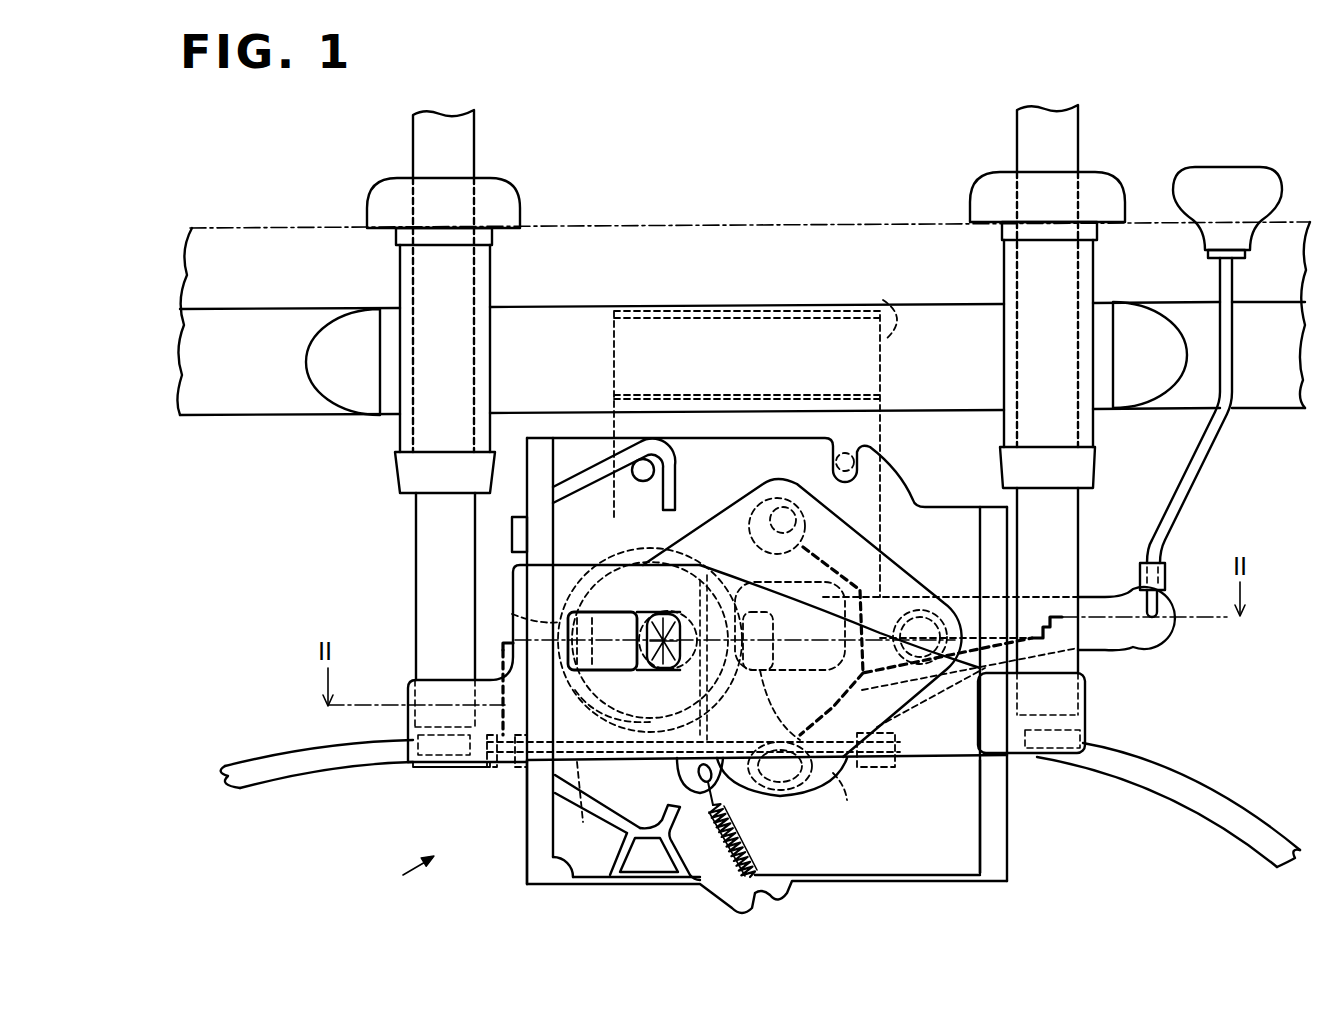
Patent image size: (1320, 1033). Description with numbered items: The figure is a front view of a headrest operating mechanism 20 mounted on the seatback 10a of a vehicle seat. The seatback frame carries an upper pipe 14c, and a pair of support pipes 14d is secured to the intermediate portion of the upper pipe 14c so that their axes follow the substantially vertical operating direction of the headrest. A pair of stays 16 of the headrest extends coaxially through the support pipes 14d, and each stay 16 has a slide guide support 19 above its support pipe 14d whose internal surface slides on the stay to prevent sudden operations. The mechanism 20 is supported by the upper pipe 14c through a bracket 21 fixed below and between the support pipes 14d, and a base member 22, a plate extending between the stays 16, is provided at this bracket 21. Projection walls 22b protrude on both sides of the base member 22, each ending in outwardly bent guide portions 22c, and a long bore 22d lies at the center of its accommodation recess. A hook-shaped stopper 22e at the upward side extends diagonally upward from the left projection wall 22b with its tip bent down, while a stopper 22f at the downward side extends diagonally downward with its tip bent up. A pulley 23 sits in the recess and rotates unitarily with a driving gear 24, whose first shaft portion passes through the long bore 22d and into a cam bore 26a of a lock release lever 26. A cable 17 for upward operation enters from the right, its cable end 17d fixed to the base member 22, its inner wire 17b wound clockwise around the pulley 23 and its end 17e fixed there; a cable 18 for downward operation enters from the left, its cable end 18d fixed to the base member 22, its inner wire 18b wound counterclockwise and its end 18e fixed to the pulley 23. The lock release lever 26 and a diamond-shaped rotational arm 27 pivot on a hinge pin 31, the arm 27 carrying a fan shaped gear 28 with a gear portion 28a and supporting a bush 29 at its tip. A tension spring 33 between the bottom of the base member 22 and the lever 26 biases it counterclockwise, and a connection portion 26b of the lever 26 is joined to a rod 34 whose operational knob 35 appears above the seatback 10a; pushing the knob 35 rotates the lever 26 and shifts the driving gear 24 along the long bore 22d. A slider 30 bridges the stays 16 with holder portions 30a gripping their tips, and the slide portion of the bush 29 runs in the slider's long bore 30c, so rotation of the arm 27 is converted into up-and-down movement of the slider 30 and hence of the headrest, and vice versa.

The seatback 10a is at (268, 226).
The upper pipe 14c is at (546, 310).
The support pipe 14d is at (494, 270).
The stay 16 is at (476, 141).
The cable for operating the headrest in an upward direction 17 is at (1170, 790).
The inner wire 17b is at (848, 798).
The cable end 17d is at (928, 766).
The end of the inner wire 17e is at (512, 614).
The cable for operating the headrest in a downward direction 18 is at (306, 775).
The inner wire 18b is at (585, 809).
The cable end 18d is at (466, 768).
The end of the inner wire 18e is at (845, 570).
The slide guide support 19 is at (522, 190).
The headrest operating mechanism 20 is at (721, 685).
The bracket 21 is at (881, 308).
The base member 22 is at (918, 884).
The projection wall 22b is at (565, 882).
The guide portion 22c is at (527, 870).
The long bore 22d is at (652, 676).
The stopper at an upward direction side 22e is at (680, 452).
The stopper at a downward direction side 22f is at (648, 838).
The pulley 23 is at (540, 590).
The driving gear 24 is at (662, 610).
The lock release lever 26 is at (1097, 648).
The cam bore 26a is at (597, 803).
The connection portion 26b is at (1100, 597).
The rotational arm 27 is at (792, 480).
The fan shaped gear 28 is at (797, 713).
The gear portion 28a is at (728, 777).
The bush 29 is at (600, 688).
The slider 30 is at (762, 665).
The holder portion 30a is at (1090, 712).
The long bore 30c is at (603, 615).
The hinge pin 31 is at (932, 578).
The tension spring 33 is at (750, 858).
The rod 34 is at (1193, 470).
The operational knob 35 is at (1228, 166).